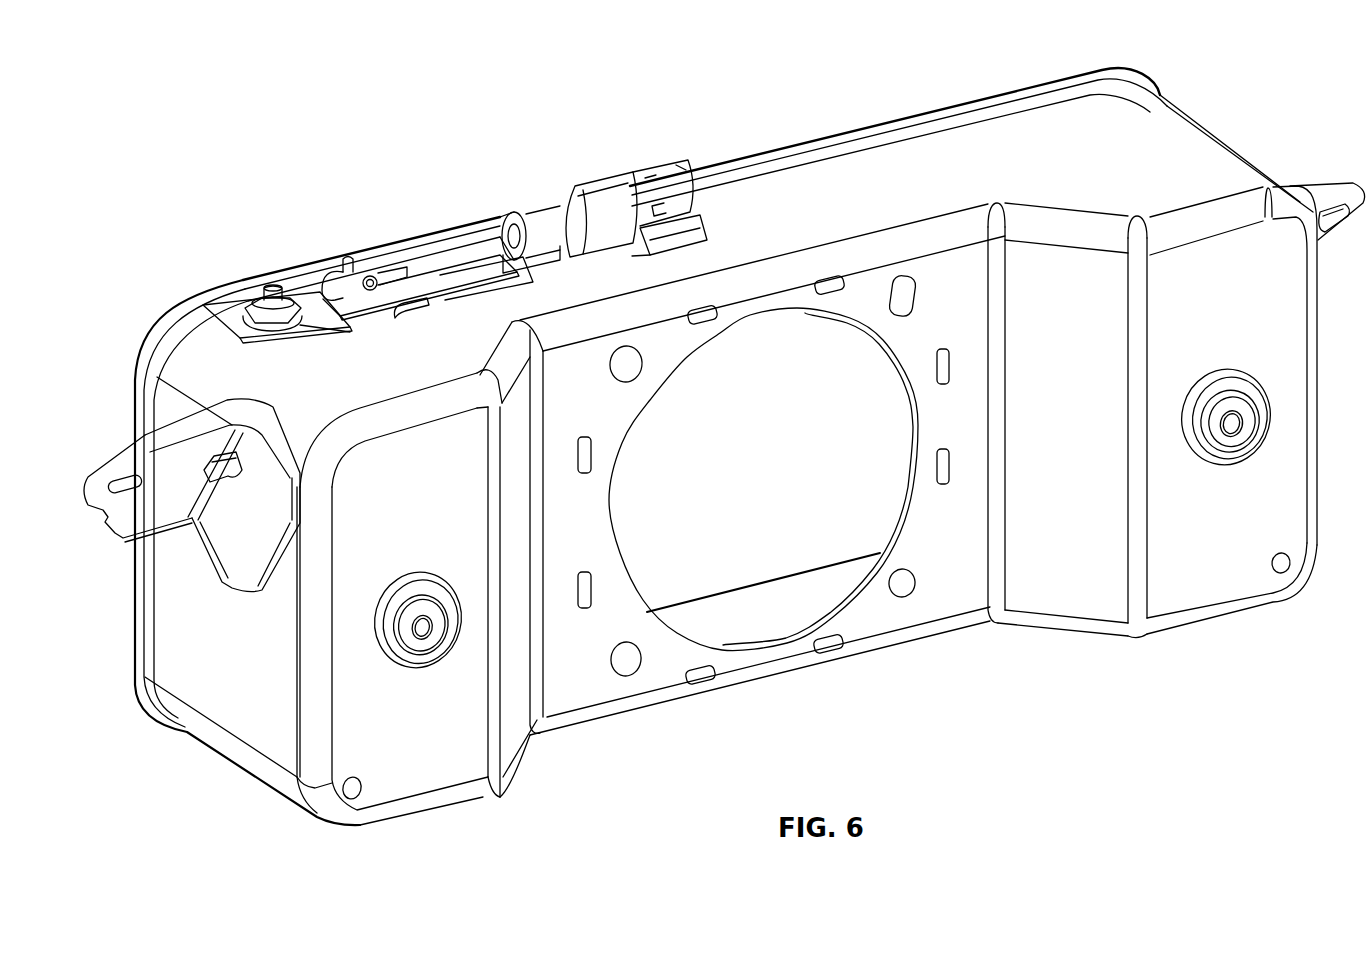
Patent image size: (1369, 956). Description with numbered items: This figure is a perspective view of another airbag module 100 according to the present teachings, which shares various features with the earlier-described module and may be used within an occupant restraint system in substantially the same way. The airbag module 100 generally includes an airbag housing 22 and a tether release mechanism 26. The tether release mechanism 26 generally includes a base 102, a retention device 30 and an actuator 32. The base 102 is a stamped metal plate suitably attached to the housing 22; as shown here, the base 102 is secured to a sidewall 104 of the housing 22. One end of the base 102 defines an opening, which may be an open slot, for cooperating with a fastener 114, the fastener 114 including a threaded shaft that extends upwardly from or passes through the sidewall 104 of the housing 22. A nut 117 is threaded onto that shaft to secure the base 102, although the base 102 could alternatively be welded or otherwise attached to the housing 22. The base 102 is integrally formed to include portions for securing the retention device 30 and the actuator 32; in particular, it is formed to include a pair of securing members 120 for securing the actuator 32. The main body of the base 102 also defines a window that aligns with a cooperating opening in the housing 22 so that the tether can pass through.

The airbag module 100 is at (178, 96).
The airbag housing 22 is at (1028, 82).
The tether release mechanism 26 is at (449, 222).
The retention device 30 is at (382, 252).
The actuator 32 is at (666, 180).
The base 102 is at (234, 298).
The sidewall 104 is at (878, 172).
The fastener 114 is at (282, 278).
The nut 117 is at (163, 377).
The securing members 120 is at (588, 208).